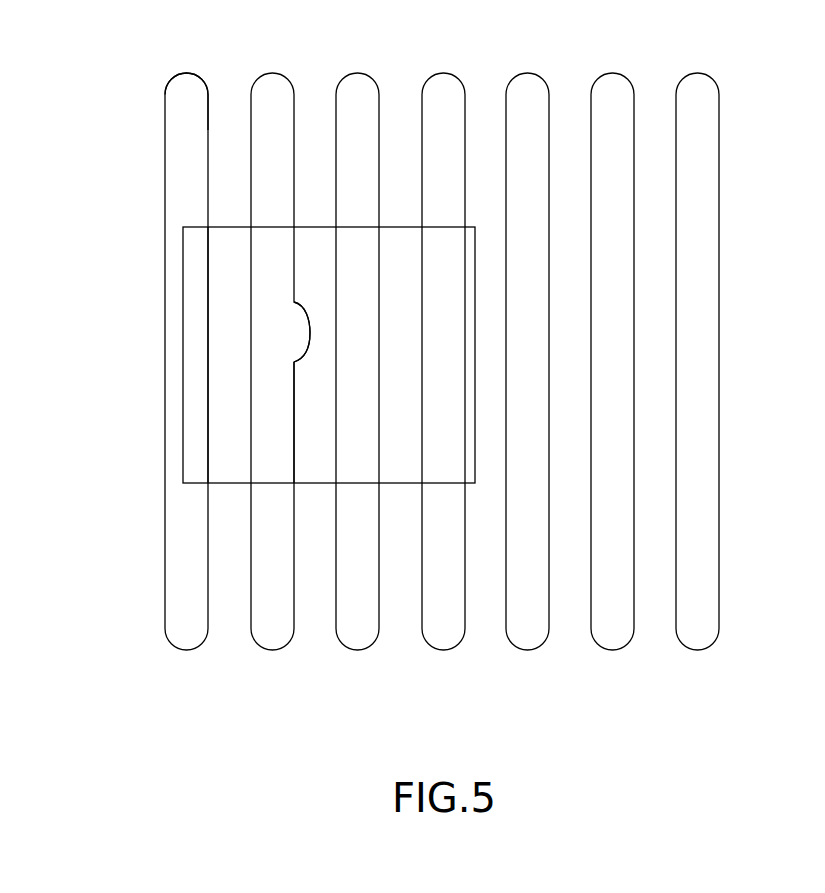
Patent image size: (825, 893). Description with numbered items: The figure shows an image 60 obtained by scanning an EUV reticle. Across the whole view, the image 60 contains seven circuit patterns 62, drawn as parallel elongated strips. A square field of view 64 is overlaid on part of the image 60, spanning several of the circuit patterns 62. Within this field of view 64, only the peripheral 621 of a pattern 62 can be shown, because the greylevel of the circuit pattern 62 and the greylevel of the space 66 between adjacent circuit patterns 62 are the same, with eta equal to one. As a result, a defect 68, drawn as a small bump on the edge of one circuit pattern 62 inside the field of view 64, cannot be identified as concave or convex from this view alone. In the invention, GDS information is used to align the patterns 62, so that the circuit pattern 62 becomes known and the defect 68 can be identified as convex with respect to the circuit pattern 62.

The image 60 is at (790, 108).
The circuit pattern 62 is at (184, 630).
The peripheral 621 is at (208, 128).
The square field of view 64 is at (184, 356).
The space 66 is at (233, 458).
The defect 68 is at (309, 330).